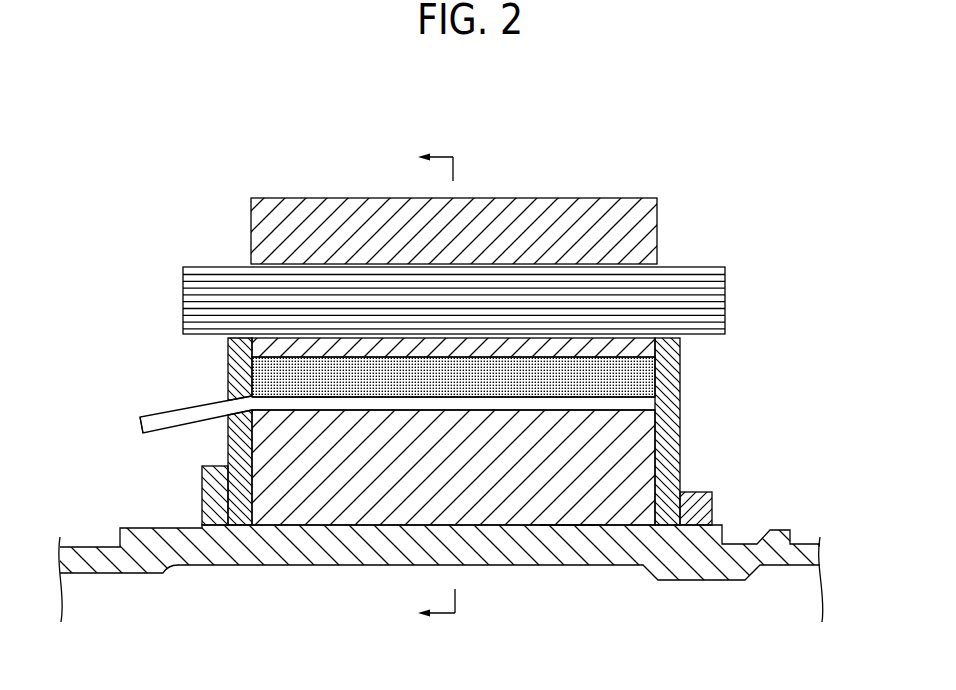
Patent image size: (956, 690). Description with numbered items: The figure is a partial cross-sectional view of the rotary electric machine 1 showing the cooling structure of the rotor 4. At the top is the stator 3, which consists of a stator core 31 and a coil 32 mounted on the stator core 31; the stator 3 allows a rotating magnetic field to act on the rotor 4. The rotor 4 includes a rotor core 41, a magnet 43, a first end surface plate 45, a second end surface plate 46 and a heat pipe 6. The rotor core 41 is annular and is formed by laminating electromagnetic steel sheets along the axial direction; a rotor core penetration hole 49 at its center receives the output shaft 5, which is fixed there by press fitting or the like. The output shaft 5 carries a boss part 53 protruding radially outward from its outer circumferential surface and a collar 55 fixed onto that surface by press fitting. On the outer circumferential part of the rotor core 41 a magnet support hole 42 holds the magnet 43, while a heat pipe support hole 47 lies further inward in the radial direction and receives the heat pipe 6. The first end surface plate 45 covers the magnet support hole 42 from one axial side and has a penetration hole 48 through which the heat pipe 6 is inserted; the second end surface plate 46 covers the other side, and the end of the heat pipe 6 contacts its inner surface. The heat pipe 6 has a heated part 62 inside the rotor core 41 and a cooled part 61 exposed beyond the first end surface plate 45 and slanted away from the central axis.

The device 1 is at (676, 154).
The stator 3 is at (764, 178).
The stator core 31 is at (640, 227).
The coil 32 is at (668, 278).
The rotor 4 is at (692, 401).
The rotor core 41 is at (643, 440).
The magnet support hole 42 is at (533, 368).
The magnet 43 is at (645, 380).
The first end surface plate 45 is at (232, 437).
The second end surface plate 46 is at (662, 473).
The heat pipe support hole 47 is at (382, 410).
The penetration hole 48 is at (241, 393).
The rotor core penetration hole 49 is at (570, 528).
The output shaft 5 is at (720, 560).
The boss part 53 is at (213, 498).
The collar 55 is at (703, 507).
The heat pipe 6 is at (197, 405).
The cooled part 61 is at (165, 422).
The heated part 62 is at (312, 402).